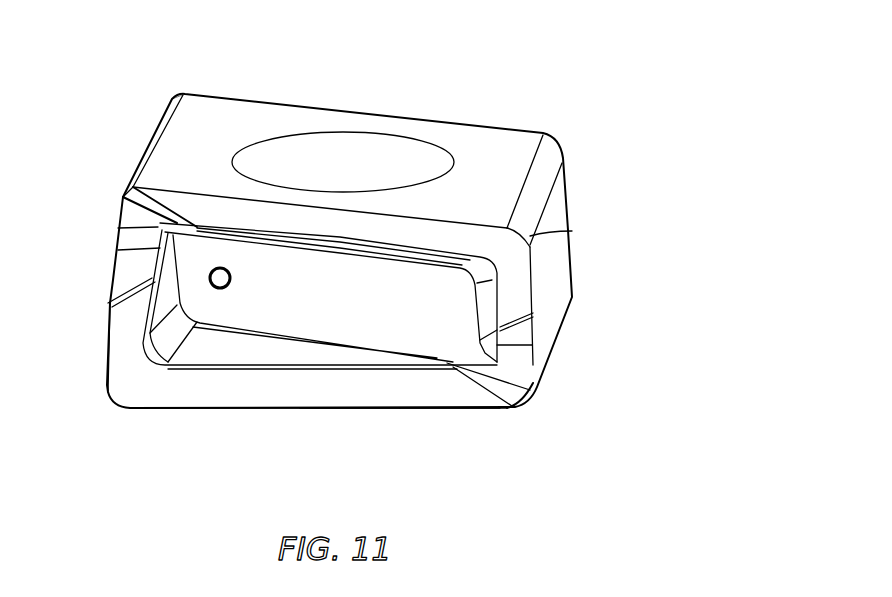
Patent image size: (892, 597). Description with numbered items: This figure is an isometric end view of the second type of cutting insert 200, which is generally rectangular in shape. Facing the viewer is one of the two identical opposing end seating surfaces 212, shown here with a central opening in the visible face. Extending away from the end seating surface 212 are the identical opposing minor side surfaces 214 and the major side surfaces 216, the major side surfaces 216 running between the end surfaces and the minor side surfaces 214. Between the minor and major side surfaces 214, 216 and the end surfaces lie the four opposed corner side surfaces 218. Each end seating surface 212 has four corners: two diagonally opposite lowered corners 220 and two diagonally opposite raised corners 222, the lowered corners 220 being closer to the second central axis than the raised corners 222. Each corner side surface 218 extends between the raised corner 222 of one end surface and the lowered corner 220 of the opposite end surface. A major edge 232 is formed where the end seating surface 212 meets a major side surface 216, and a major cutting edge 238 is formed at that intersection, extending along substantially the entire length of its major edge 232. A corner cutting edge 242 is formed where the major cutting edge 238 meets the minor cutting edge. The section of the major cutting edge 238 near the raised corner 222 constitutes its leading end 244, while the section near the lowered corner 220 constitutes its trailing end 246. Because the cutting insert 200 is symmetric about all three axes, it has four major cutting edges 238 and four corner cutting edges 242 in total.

The cutting insert 200 is at (578, 20).
The end seating surface 212 is at (291, 354).
The minor side surface 214 is at (562, 268).
The major side surface 216 is at (216, 114).
The corner side surface 218 is at (158, 118).
The lowered corner 220 is at (114, 195).
The raised corner 222 is at (524, 221).
The major edge 232 is at (350, 427).
The major cutting edge 238 is at (404, 419).
The corner cutting edge 242 is at (533, 233).
The leading end 244 is at (220, 410).
The trailing end 246 is at (445, 410).